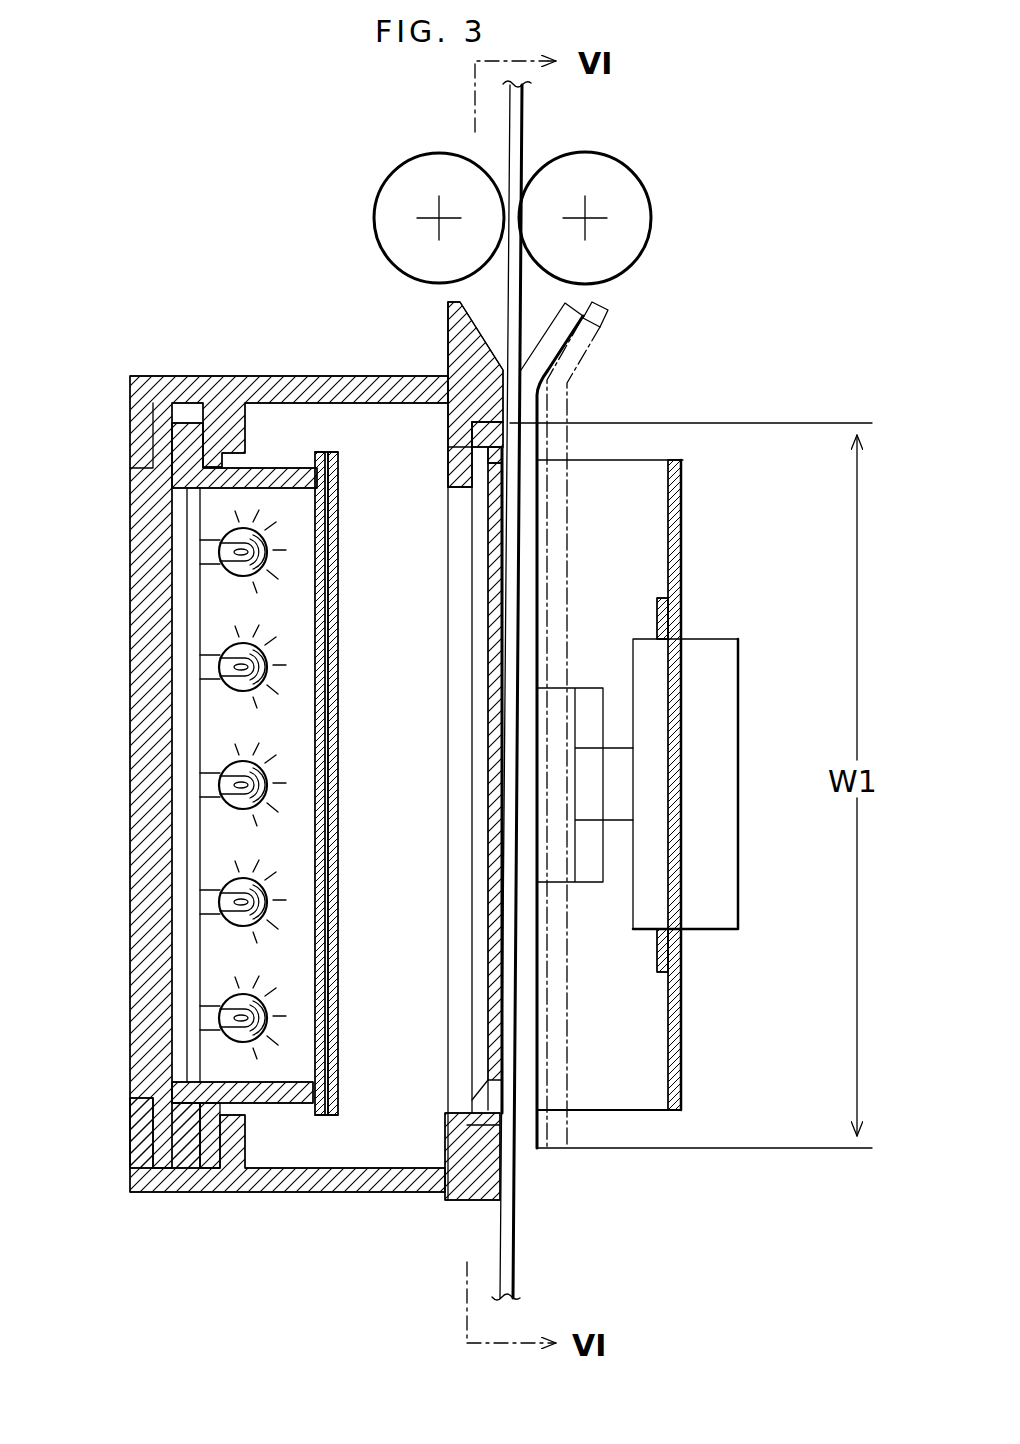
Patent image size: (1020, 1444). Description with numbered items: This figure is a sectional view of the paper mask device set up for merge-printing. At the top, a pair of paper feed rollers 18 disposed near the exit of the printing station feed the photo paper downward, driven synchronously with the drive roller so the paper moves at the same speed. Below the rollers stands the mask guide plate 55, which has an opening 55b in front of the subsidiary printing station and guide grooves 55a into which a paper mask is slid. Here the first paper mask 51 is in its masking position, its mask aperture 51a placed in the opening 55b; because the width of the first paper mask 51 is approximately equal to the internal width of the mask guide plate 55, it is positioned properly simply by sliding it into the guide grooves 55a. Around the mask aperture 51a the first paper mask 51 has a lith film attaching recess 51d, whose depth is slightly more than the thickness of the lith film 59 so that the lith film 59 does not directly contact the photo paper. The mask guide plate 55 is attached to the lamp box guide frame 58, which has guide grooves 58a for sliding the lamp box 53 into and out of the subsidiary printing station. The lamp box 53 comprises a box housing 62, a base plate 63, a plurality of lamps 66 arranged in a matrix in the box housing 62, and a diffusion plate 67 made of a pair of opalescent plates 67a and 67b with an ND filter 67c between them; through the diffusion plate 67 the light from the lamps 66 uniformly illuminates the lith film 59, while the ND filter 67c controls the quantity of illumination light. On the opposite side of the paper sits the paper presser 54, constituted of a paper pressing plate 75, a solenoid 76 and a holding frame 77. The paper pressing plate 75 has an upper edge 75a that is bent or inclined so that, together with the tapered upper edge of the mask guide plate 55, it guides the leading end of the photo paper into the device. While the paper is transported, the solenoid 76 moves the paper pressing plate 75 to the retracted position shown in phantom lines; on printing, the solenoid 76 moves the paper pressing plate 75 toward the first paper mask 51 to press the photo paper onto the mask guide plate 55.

The paper feed rollers 18 is at (640, 190).
The first paper mask 51 is at (496, 751).
The mask aperture 51a is at (473, 508).
The lith film attaching recess 51d is at (492, 448).
The lamp box 53 is at (382, 783).
The paper presser 54 is at (686, 785).
The mask guide plate 55 is at (493, 406).
The guide grooves 55a is at (486, 424).
The opening 55b is at (456, 465).
The lamp box guide frame 58 is at (328, 1195).
The guide grooves 58a is at (229, 1163).
The lith film 59 is at (492, 918).
The box housing 62 is at (266, 472).
The base plate 63 is at (155, 608).
The lamps 66 is at (250, 575).
The diffusion plate 67 is at (382, 783).
The opalescent plate 67a is at (330, 699).
The opalescent plate 67b is at (395, 683).
The ND filter 67c is at (327, 748).
The paper pressing plate 75 is at (527, 402).
The upper edge 75a is at (600, 326).
The solenoid 76 is at (740, 735).
The holding frame 77 is at (683, 508).